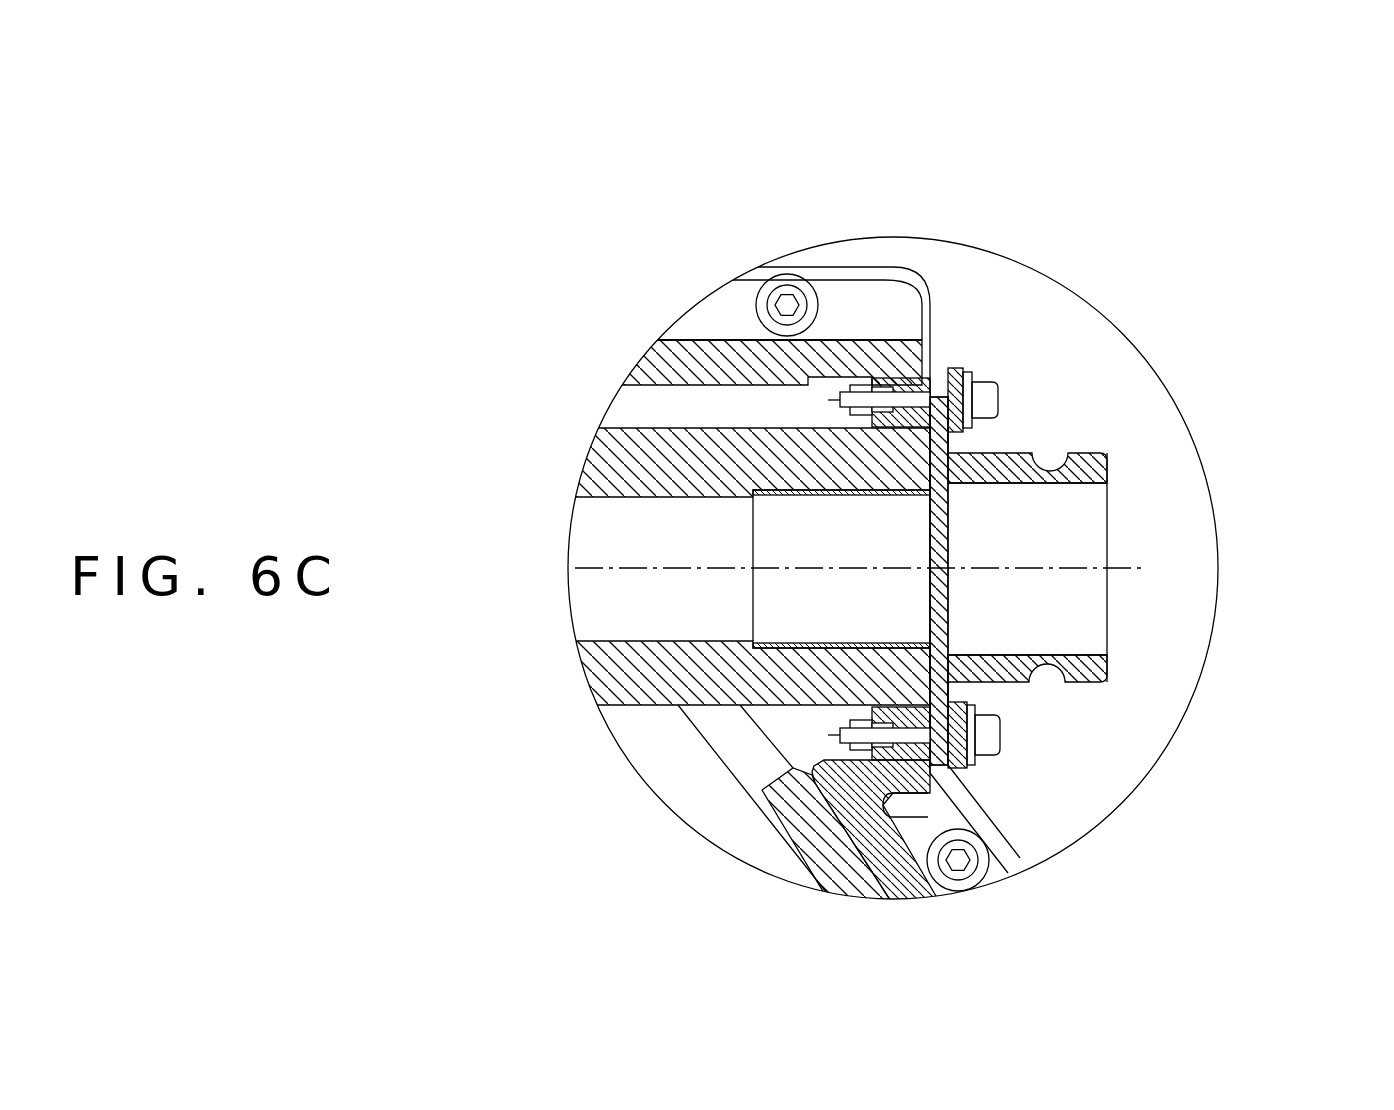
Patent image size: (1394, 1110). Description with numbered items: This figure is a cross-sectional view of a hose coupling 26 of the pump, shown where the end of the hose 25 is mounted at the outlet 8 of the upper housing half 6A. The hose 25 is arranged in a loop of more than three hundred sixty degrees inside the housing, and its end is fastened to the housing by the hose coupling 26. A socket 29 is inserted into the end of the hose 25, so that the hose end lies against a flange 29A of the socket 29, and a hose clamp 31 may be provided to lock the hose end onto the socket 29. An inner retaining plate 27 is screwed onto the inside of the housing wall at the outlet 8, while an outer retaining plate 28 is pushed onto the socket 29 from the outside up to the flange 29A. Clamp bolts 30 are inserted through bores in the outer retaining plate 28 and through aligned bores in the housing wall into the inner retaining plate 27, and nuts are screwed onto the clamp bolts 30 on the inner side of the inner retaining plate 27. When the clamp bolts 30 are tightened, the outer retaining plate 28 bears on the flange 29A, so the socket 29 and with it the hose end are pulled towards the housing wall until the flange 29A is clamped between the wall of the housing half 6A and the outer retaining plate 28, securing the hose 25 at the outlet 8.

The upper housing half 6A is at (880, 814).
The outlet 8 is at (846, 218).
The hose 25 is at (642, 433).
The hose coupling 26 is at (1083, 234).
The inner retaining plate 27 is at (888, 378).
The outer retaining plate 28 is at (952, 736).
The socket 29 is at (1098, 668).
The flange 29A is at (1003, 484).
The clamp bolts 30 is at (988, 393).
The hose clamp 31 is at (808, 375).